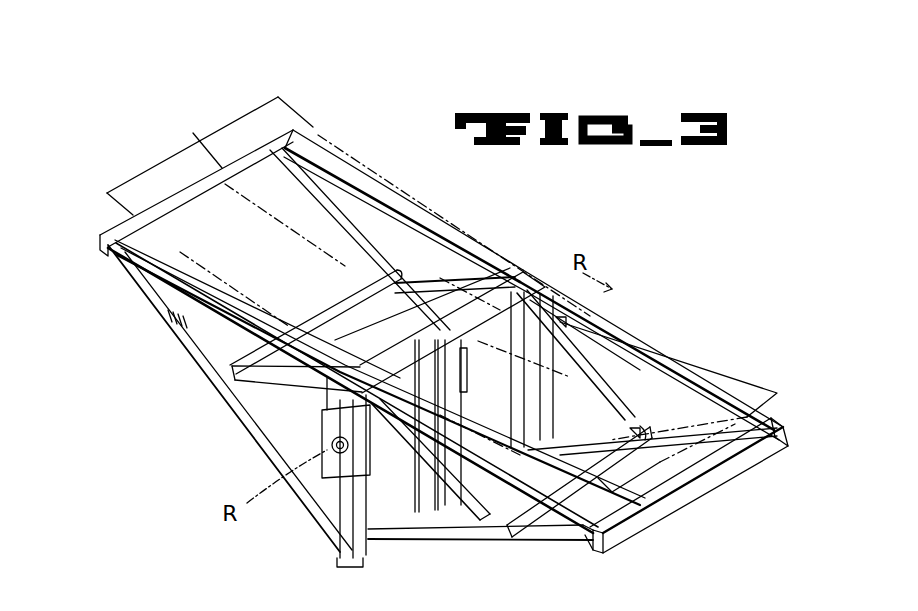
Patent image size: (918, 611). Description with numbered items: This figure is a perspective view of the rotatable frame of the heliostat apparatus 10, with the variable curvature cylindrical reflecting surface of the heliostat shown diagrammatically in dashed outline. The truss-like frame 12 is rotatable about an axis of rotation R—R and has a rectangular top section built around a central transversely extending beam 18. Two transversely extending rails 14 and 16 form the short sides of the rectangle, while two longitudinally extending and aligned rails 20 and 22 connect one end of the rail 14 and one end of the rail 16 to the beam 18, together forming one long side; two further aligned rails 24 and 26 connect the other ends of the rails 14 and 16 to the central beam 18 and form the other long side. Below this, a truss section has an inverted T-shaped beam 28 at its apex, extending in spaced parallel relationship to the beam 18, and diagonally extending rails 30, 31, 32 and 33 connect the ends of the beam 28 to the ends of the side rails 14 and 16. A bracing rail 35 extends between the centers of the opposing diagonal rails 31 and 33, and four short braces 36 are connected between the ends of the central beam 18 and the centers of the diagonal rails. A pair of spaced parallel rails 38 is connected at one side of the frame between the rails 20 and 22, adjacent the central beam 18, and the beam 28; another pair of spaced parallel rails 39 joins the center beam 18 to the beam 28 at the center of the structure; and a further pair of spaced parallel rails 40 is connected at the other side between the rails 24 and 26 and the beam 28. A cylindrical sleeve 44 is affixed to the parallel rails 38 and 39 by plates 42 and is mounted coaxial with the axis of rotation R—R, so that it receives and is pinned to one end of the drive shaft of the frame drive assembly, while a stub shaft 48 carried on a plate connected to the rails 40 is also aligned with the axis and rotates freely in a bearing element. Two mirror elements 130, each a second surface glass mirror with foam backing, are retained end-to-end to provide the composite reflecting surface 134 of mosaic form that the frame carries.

The heliostat apparatus 10 is at (142, 333).
The truss-like frame 12 is at (158, 306).
The transversely extending rail 14 is at (105, 228).
The transversely extending rail 16 is at (680, 498).
The central transversely extending beam 18 is at (510, 278).
The longitudinally extending rail 20 is at (140, 263).
The longitudinally extending rail 22 is at (584, 528).
The aligned rail 24 is at (327, 158).
The aligned rail 26 is at (657, 357).
The inverted T-shaped beam 28 is at (343, 553).
The diagonally extending rail 30 is at (152, 288).
The diagonally extending rail 31 is at (484, 540).
The diagonally extending rail 32 is at (289, 150).
The diagonally extending rail 33 is at (743, 430).
The bracing rail 35 is at (637, 423).
The short brace 36 is at (234, 378).
The spaced parallel rails 38 is at (357, 532).
The spaced parallel rails 39 is at (457, 417).
The spaced parallel rails 40 is at (523, 423).
The plate 42 is at (330, 422).
The cylindrical sleeve 44 is at (332, 447).
The stub shaft 48 is at (573, 327).
The mirror element 130 is at (198, 133).
The composite reflecting surface 134 is at (284, 98).